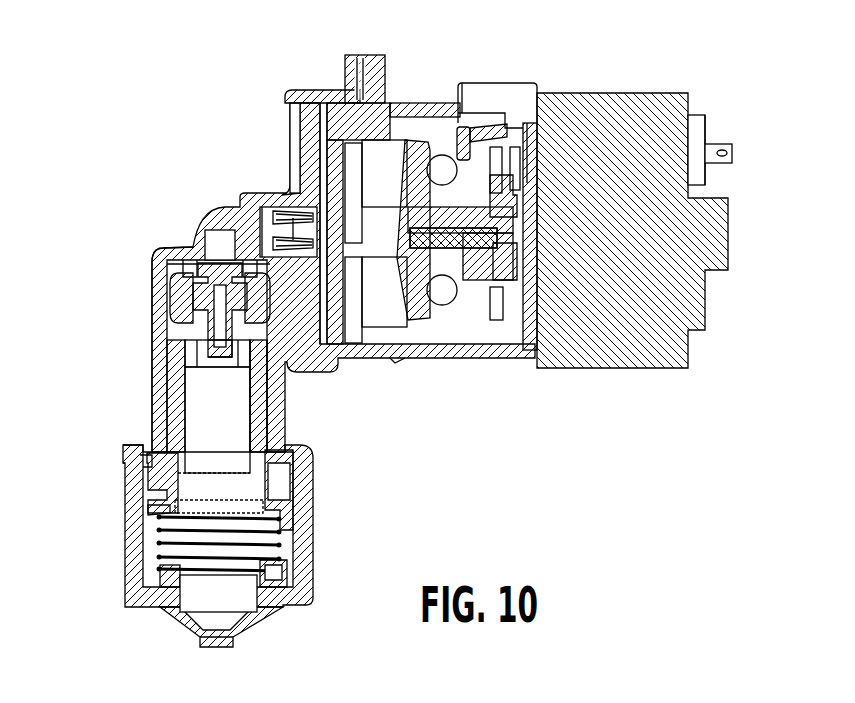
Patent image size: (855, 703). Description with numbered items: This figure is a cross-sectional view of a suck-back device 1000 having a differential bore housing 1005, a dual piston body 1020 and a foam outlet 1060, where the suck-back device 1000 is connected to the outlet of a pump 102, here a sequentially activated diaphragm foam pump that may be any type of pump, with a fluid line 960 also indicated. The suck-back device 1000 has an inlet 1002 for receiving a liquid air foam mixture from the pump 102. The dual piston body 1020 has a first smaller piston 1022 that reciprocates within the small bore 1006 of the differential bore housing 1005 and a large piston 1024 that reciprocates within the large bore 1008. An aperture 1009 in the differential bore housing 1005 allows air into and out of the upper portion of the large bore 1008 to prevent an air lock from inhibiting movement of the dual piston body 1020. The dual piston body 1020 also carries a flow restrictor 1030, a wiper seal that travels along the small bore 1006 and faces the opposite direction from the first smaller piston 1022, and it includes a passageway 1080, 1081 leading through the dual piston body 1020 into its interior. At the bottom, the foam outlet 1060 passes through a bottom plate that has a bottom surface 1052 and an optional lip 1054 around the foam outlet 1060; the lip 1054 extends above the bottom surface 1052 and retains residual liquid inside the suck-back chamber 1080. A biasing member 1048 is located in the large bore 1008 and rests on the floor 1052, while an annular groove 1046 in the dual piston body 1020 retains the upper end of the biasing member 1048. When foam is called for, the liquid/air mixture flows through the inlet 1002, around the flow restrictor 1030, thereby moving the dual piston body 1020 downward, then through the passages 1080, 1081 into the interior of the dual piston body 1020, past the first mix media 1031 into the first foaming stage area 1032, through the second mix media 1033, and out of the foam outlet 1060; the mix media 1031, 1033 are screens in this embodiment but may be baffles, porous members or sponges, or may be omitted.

The fluid line 960 is at (206, 0).
The pump 102 is at (490, 47).
The suck-back device 1000 is at (138, 238).
The inlet 1002 is at (208, 250).
The differential bore housing 1005 is at (404, 465).
The small bore 1006 is at (160, 354).
The large bore 1008 is at (305, 526).
The aperture 1009 is at (143, 448).
The dual piston body 1020 is at (284, 455).
The first smaller piston 1022 is at (173, 318).
The large piston 1024 is at (157, 513).
The flow restrictor 1030 is at (172, 283).
The first mix media 1031 is at (213, 368).
The first foaming stage area 1032 is at (270, 435).
The second mix media 1033 is at (177, 483).
The annular groove 1046 is at (157, 519).
The biasing member 1048 is at (273, 541).
The bottom surface 1052 is at (146, 605).
The lip 1054 is at (296, 572).
The foam outlet 1060 is at (203, 641).
The passageway 1080 is at (214, 300).
The passageway 1081 is at (232, 330).